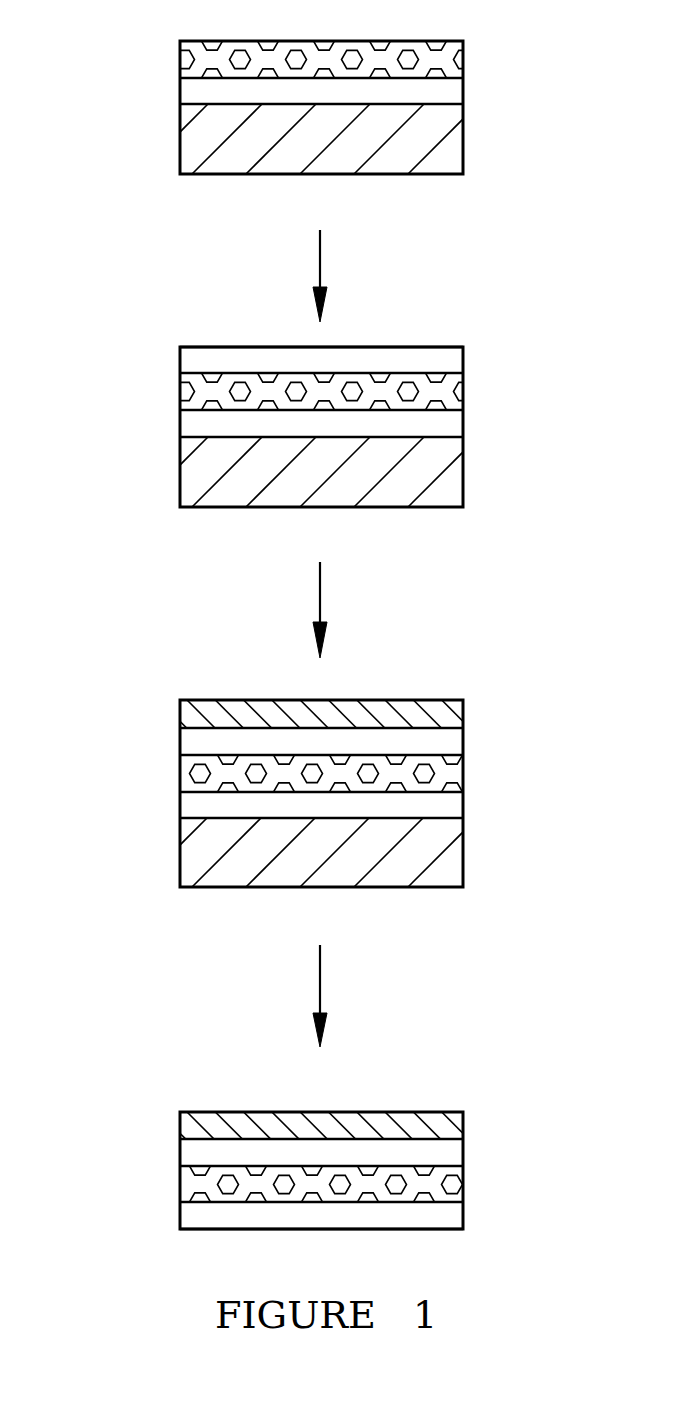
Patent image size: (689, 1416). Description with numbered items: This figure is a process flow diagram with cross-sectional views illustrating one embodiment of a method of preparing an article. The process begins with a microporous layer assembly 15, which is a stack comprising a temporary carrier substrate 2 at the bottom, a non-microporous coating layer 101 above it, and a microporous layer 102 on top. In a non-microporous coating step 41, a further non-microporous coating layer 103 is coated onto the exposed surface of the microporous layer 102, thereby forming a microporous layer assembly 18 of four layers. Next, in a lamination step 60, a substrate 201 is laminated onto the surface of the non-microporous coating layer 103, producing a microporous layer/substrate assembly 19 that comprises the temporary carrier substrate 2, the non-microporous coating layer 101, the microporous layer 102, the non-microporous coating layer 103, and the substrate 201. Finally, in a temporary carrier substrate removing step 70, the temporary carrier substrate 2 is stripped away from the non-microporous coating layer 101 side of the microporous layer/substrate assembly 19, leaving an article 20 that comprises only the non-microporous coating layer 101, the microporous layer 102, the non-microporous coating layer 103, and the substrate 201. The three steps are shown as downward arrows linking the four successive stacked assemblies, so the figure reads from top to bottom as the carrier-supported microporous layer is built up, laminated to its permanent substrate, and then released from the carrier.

The temporary carrier substrate 2 is at (465, 133).
The non-microporous coating layer 101 is at (180, 88).
The microporous layer 102 is at (180, 62).
The non-microporous coating layer 103 is at (180, 363).
The substrate 201 is at (430, 700).
The microporous layer assembly 15 is at (321, 132).
The microporous layer assembly 18 is at (321, 451).
The microporous layer/substrate assembly 19 is at (321, 819).
The article 20 is at (321, 1195).
The non-microporous coating step 41 is at (341, 276).
The lamination step 60 is at (340, 610).
The temporary carrier substrate removing step 70 is at (340, 996).